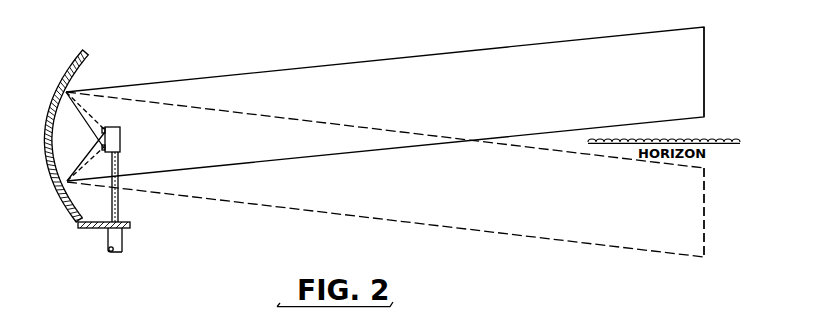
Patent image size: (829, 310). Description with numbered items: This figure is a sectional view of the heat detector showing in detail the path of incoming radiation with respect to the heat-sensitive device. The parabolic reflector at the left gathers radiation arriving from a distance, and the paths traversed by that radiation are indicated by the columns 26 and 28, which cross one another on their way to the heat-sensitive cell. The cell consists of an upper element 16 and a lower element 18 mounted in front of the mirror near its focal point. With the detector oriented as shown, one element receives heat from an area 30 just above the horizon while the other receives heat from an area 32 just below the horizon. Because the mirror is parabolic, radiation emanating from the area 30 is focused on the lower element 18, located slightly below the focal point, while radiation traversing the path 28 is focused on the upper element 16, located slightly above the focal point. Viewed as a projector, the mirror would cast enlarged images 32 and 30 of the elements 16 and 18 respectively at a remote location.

The upper element 16 is at (104, 131).
The lower element 18 is at (90, 136).
The column 26 is at (432, 55).
The column 28 is at (478, 233).
The area just above the horizon 30 is at (704, 83).
The area just below the horizon 32 is at (704, 237).